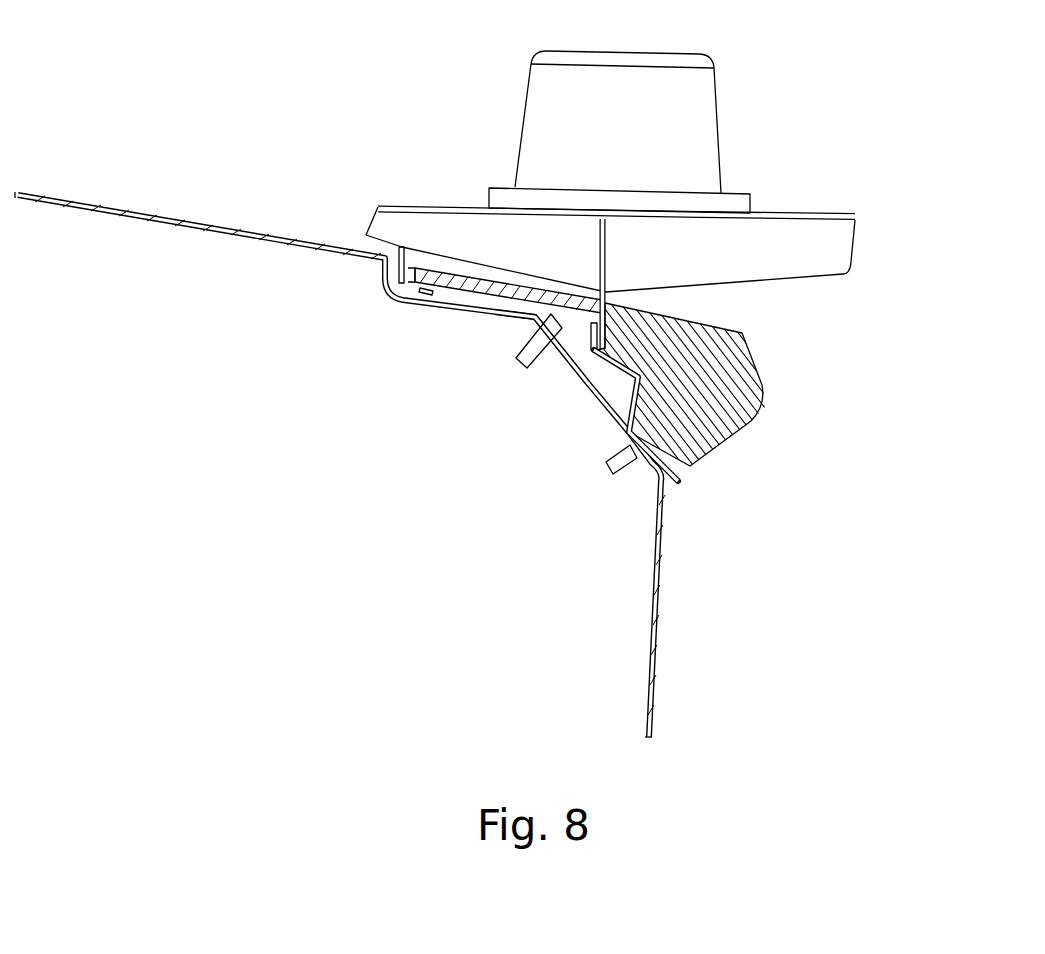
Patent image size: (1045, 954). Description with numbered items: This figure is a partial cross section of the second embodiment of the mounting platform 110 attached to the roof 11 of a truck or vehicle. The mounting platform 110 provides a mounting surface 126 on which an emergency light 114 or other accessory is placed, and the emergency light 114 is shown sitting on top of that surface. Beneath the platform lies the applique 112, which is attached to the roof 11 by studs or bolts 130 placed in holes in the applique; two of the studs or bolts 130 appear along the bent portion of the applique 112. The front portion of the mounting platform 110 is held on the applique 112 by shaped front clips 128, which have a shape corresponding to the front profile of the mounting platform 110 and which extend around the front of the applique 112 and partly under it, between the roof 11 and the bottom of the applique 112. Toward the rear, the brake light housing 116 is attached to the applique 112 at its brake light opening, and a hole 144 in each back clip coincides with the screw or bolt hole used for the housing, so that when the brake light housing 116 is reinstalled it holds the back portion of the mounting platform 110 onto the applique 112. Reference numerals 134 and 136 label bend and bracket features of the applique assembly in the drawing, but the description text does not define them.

The roof 11 is at (133, 212).
The mounting platform 110 is at (824, 204).
The applique 112 is at (505, 288).
The emergency light 114 is at (712, 108).
The brake light housing 116 is at (748, 360).
The mounting surface 126 is at (452, 207).
The shaped front clips 128 is at (404, 270).
The studs or bolts 130 is at (525, 364).
The bend 134 is at (535, 318).
The bracket 136 is at (592, 354).
The hole 144 is at (593, 294).